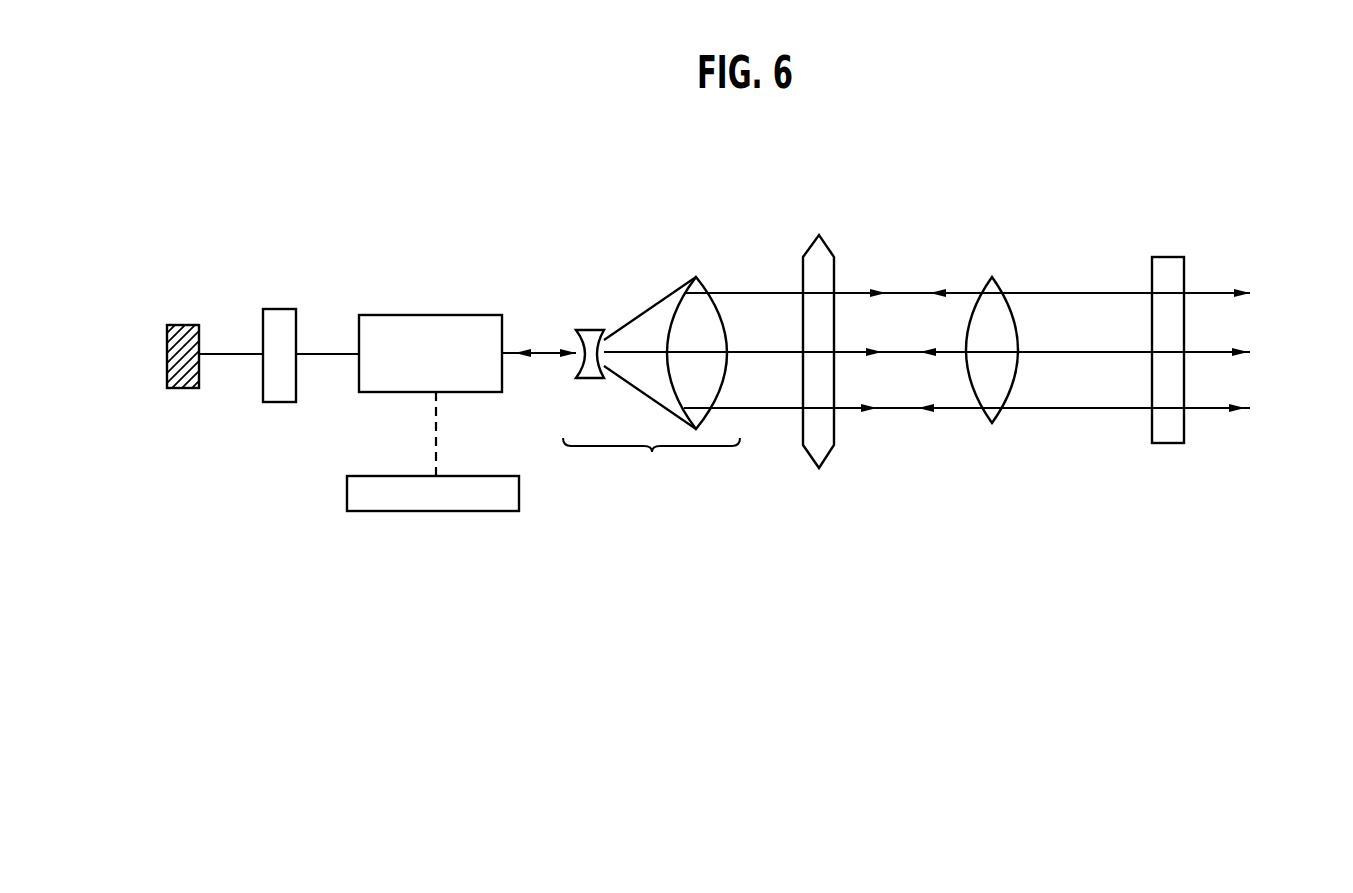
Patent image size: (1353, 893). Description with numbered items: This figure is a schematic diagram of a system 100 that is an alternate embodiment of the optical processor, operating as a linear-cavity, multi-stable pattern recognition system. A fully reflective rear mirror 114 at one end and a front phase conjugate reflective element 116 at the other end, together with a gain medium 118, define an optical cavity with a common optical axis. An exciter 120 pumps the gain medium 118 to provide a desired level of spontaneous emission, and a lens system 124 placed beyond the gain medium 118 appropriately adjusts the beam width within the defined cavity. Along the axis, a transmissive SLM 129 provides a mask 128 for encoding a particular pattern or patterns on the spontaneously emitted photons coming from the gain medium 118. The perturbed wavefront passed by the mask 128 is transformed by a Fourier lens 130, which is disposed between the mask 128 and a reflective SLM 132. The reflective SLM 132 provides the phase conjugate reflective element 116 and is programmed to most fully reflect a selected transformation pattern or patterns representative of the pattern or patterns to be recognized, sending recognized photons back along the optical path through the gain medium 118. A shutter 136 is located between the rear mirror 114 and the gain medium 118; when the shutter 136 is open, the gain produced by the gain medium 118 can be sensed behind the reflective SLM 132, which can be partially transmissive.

The system 100 is at (676, 222).
The rear mirror 114 is at (185, 325).
The shutter 136 is at (280, 309).
The gain medium 118 is at (460, 315).
The exciter 120 is at (456, 512).
The lens system 124 is at (634, 302).
The mask 128 is at (829, 364).
The transmissive SLM 129 is at (813, 240).
The Fourier lens 130 is at (997, 280).
The phase conjugate reflective element 116 is at (1172, 400).
The reflective SLM 132 is at (1186, 425).